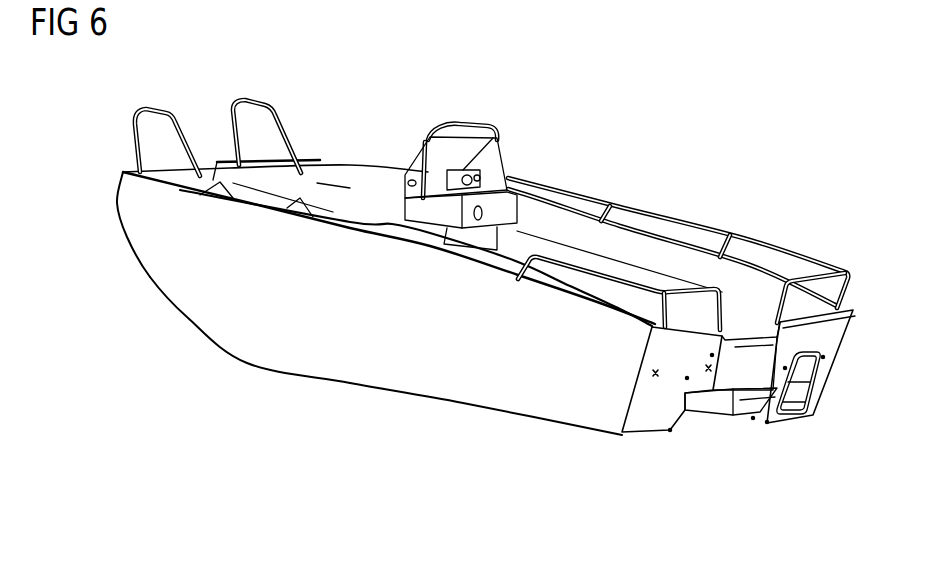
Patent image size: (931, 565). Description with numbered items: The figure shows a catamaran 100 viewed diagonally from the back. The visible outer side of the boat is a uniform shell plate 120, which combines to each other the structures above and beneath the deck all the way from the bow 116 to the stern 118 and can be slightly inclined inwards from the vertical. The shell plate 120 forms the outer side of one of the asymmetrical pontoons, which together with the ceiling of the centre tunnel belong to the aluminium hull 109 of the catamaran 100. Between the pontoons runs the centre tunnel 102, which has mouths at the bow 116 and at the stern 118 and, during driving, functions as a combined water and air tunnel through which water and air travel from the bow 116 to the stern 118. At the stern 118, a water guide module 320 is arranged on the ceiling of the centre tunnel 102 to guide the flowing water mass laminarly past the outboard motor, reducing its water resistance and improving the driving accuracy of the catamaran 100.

The catamaran 100 is at (445, 308).
The centre tunnel 102 is at (113, 146).
The hull 109 is at (483, 456).
The bow 116 is at (116, 280).
The stern 118 is at (789, 461).
The shell plate 120 is at (293, 342).
The water guide module 320 is at (720, 406).